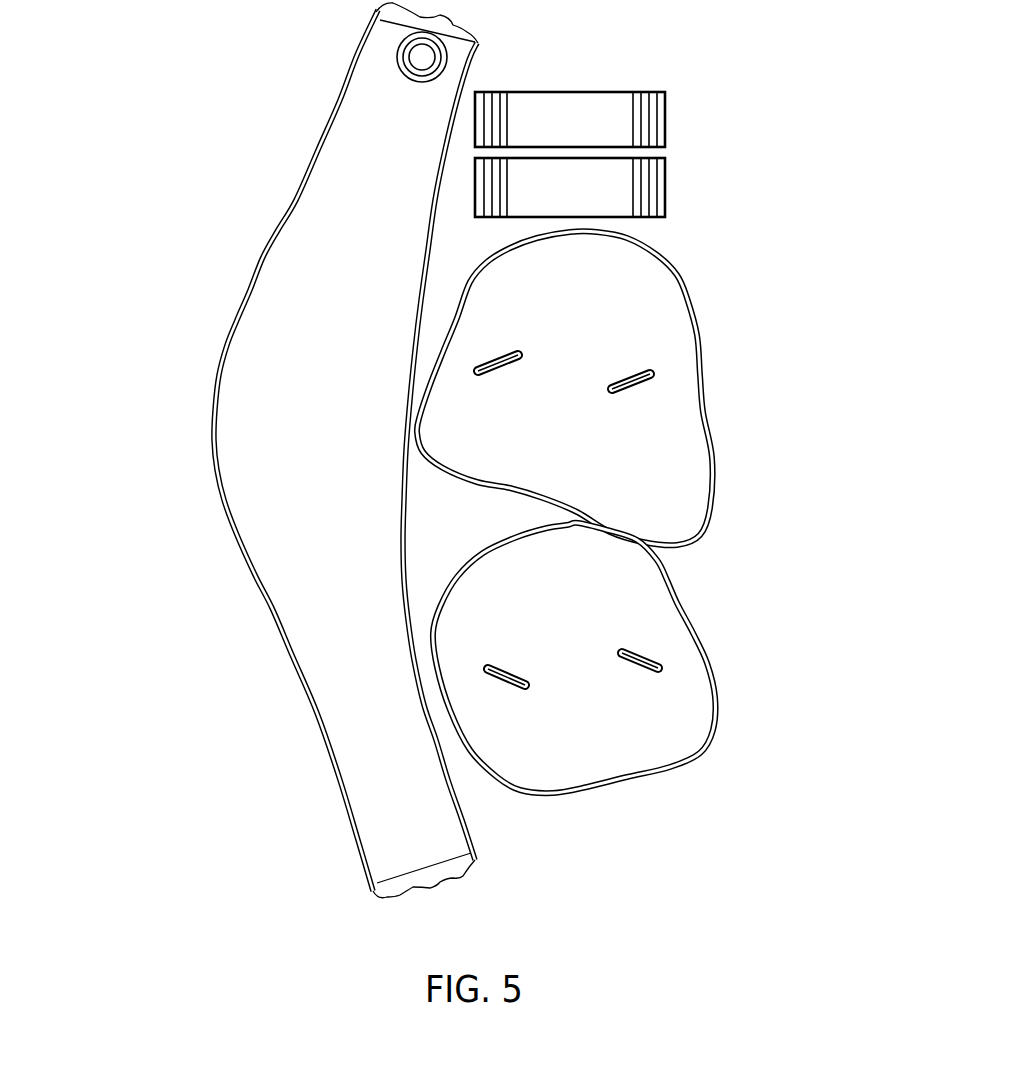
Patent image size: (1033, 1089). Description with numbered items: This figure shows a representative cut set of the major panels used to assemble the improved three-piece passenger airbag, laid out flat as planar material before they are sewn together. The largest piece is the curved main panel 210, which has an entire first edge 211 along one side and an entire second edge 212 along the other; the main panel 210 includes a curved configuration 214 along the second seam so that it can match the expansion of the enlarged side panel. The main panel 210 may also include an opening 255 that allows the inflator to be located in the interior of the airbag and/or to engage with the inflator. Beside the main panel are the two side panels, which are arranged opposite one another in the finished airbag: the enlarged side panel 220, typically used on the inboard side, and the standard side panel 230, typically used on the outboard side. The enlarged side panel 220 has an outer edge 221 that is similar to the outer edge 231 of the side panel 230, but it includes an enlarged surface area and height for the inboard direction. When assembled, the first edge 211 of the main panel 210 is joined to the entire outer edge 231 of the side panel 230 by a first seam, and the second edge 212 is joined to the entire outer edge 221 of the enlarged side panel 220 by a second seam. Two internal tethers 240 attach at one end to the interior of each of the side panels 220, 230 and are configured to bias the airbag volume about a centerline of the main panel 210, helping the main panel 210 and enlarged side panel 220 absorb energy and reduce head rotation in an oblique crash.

The main panel 210 is at (320, 243).
The first edge 211 is at (427, 310).
The second edge 212 is at (316, 713).
The curved configuration 214 is at (217, 383).
The opening 255 is at (424, 59).
The internal tethers 240 is at (577, 114).
The enlarged side panel 220 is at (665, 447).
The outer edge 221 is at (683, 283).
The side panel 230 is at (625, 625).
The outer edge 231 is at (707, 685).